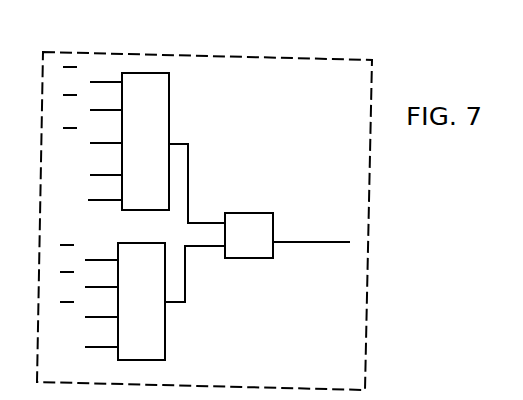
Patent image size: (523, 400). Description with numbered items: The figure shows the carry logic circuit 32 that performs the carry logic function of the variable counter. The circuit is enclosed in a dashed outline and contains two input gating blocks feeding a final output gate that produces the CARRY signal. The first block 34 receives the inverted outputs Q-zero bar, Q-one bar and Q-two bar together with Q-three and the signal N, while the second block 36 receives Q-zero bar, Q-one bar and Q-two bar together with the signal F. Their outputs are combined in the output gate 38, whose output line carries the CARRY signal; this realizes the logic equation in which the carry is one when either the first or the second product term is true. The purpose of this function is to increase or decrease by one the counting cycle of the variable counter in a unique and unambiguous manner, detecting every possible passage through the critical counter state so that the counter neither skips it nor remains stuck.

The carry logic circuit 32 is at (149, 53).
The upper gate 34 is at (144, 145).
The lower gate 36 is at (142, 301).
The carry output gate 38 is at (287, 235).